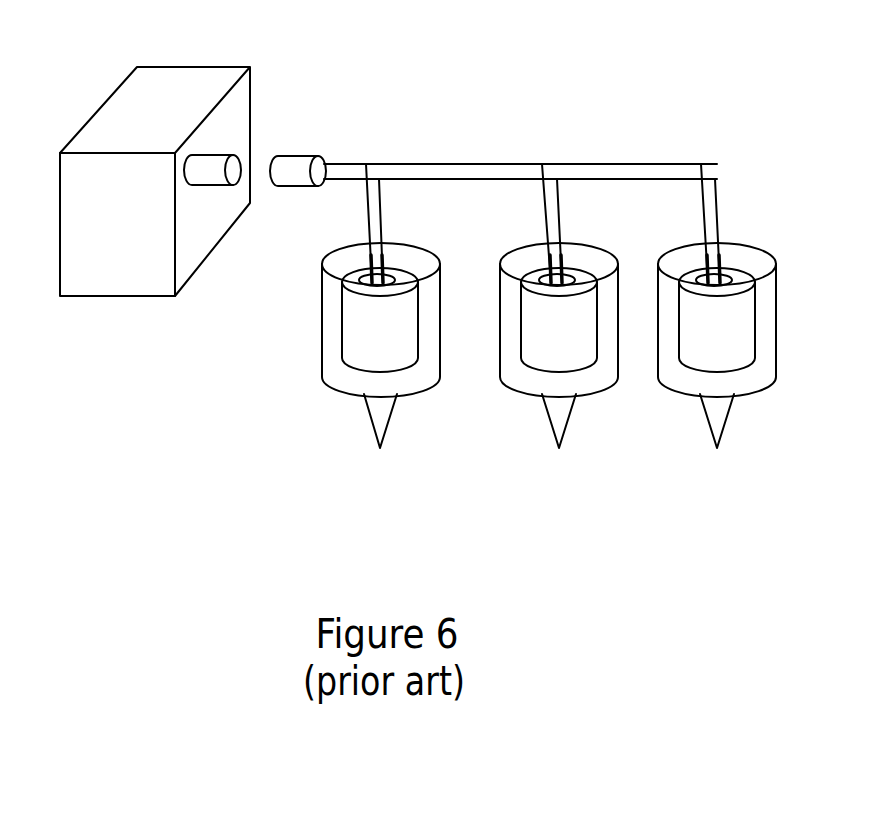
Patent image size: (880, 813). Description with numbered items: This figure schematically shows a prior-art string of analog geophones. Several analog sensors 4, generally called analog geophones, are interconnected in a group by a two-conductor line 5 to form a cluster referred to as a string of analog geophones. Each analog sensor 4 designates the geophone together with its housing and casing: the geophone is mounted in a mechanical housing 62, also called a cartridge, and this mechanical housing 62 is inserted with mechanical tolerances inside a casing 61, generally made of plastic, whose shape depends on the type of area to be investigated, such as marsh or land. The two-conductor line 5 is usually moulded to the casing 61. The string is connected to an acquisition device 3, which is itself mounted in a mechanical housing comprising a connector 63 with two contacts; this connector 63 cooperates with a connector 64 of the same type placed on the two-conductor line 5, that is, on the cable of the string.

The acquisition device 3 is at (155, 153).
The connector 63 is at (243, 122).
The connector 64 is at (320, 117).
The two-conductor line 5 is at (520, 142).
The analog sensor 4 is at (518, 320).
The casing 61 is at (346, 359).
The mechanical housing 62 is at (413, 367).